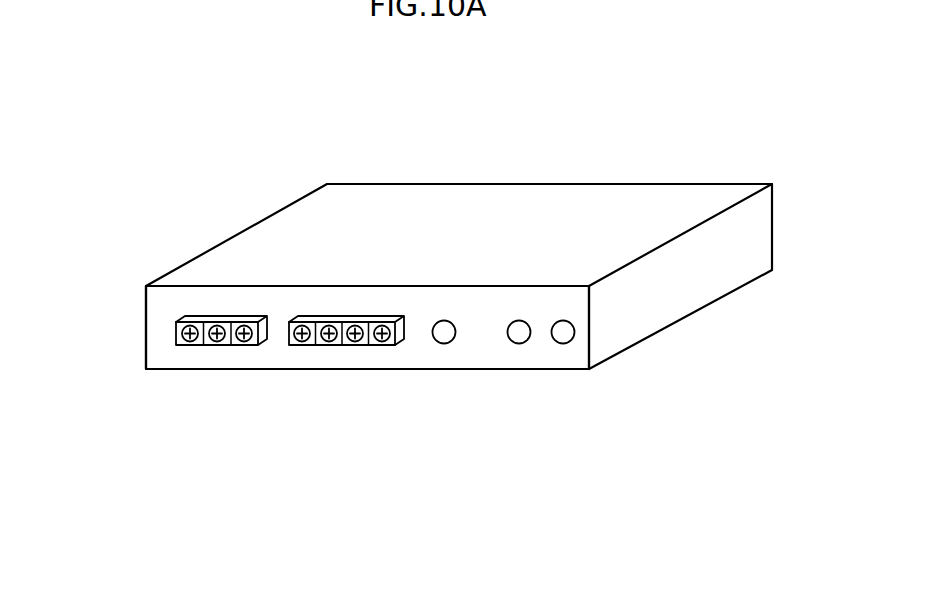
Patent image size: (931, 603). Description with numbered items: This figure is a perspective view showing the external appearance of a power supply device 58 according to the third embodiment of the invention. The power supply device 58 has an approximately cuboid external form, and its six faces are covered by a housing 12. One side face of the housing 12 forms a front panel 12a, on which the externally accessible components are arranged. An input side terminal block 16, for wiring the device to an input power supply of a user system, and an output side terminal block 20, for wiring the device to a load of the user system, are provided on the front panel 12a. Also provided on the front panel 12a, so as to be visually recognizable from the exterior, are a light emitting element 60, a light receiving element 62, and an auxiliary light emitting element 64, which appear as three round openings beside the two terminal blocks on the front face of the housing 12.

The housing 12 is at (295, 228).
The front panel 12a is at (170, 310).
The input side terminal block 16 is at (192, 347).
The output side terminal block 20 is at (330, 347).
The power supply device 58 is at (459, 232).
The light emitting element 60 is at (522, 342).
The light receiving element 62 is at (574, 331).
The auxiliary light emitting element 64 is at (444, 344).